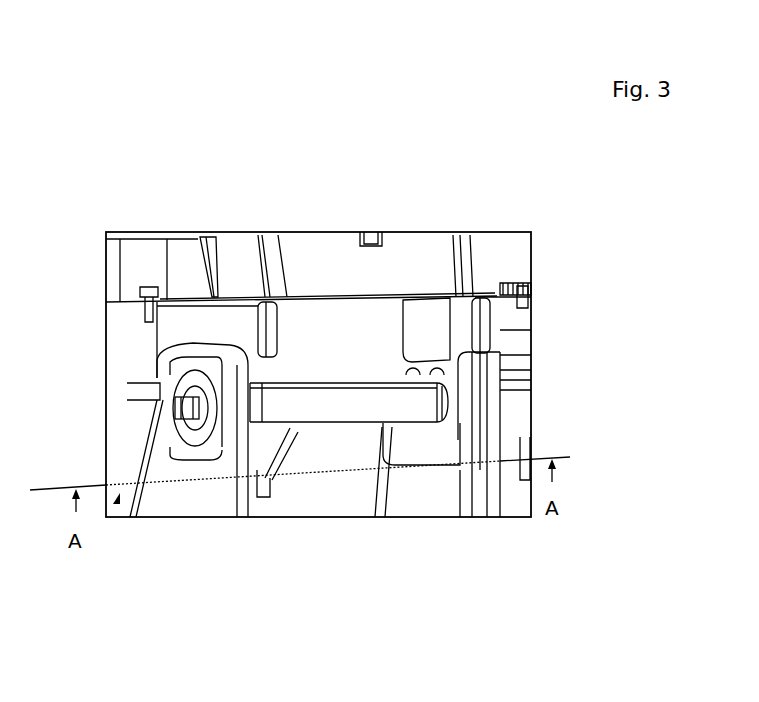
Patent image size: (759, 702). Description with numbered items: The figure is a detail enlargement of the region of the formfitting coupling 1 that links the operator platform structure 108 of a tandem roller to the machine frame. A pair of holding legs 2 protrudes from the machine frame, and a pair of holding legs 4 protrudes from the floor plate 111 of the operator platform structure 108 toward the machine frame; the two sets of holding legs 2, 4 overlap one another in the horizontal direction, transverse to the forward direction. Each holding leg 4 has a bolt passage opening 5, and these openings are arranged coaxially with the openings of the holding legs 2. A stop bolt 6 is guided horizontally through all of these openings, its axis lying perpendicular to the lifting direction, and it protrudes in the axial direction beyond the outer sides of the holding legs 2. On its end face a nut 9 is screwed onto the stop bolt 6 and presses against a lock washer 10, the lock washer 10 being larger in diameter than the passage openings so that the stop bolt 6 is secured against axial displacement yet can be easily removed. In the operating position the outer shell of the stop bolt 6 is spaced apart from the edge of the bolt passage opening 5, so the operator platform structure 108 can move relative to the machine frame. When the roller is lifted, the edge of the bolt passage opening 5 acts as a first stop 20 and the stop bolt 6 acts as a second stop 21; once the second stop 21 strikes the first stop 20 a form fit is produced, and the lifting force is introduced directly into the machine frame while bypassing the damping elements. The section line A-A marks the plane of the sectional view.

The formfitting coupling 1 is at (317, 148).
The holding legs 2 is at (208, 505).
The holding legs 4 is at (188, 313).
The bolt passage opening 5 is at (412, 372).
The stop bolt 6 is at (349, 405).
The nut 9 is at (178, 403).
The lock washer 10 is at (205, 453).
The first stop 20 is at (440, 428).
The second stop 21 is at (435, 424).
The operator platform structure 108 is at (300, 263).
The floor plate 111 is at (510, 280).